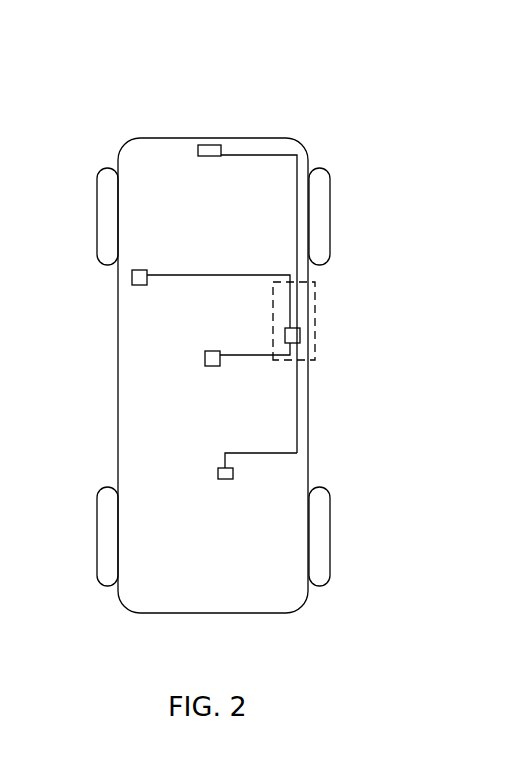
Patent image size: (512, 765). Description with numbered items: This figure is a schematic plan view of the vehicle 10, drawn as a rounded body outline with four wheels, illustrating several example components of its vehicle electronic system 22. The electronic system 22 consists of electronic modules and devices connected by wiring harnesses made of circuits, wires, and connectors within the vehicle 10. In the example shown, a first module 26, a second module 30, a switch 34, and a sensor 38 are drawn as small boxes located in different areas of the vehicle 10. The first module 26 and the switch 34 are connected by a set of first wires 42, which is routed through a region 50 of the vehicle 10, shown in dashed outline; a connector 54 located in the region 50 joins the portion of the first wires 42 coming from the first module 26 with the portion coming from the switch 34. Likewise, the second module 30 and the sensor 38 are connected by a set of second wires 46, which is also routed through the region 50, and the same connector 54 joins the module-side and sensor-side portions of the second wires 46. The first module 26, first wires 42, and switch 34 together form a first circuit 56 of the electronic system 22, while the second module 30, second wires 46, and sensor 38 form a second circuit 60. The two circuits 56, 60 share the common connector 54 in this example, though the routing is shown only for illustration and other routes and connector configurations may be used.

The vehicle 10 is at (116, 154).
The vehicle electronic system 22 is at (166, 391).
The first module 26 is at (132, 277).
The second module 30 is at (224, 480).
The switch 34 is at (204, 364).
The sensor 38 is at (200, 145).
The first wires 42 is at (195, 276).
The second wires 46 is at (297, 440).
The region 50 is at (318, 297).
The connector 54 is at (300, 338).
The first circuit 56 is at (162, 266).
The second circuit 60 is at (301, 419).